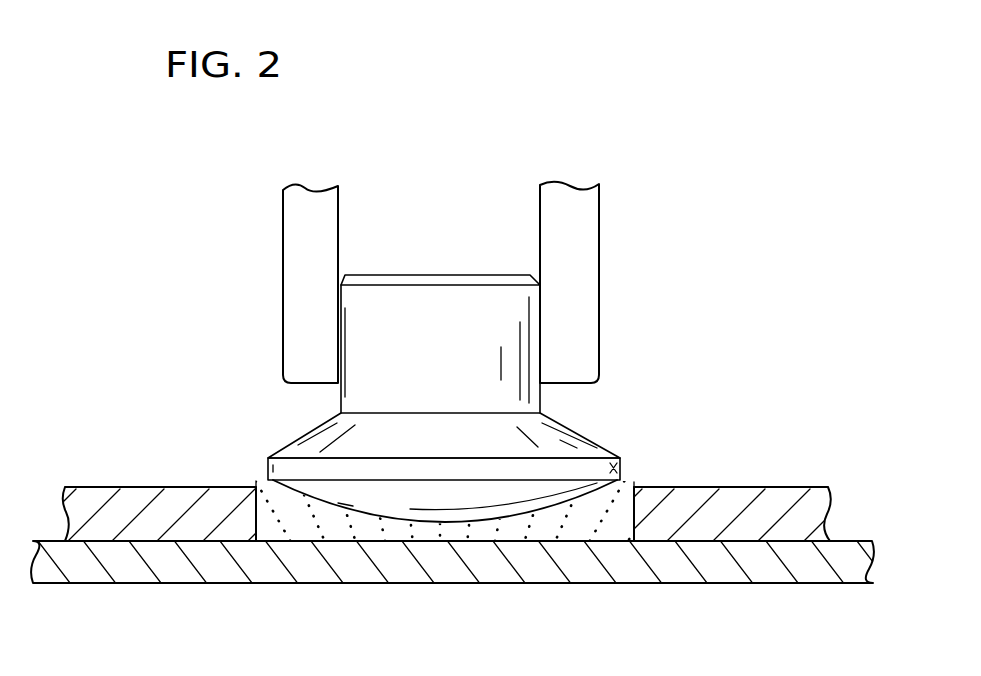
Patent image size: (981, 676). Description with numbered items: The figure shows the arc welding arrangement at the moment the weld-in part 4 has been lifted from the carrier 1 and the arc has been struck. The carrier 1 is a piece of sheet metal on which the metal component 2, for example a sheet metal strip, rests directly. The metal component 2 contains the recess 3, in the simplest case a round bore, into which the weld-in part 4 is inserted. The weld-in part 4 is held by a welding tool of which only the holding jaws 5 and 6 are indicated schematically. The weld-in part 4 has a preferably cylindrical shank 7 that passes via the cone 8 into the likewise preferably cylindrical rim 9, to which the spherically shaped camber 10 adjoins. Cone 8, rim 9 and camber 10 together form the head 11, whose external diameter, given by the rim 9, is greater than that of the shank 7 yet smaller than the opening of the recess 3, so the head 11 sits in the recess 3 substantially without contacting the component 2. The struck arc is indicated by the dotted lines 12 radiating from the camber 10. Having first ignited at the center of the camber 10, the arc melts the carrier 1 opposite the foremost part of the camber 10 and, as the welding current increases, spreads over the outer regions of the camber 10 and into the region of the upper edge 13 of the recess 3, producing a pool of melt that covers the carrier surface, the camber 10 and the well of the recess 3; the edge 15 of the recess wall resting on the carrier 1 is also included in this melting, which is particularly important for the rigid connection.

The carrier 1 is at (783, 563).
The metal component 2 is at (765, 507).
The recess 3 is at (627, 517).
The weld-in part 4 is at (463, 275).
The holding jaw 5 is at (293, 225).
The holding jaw 6 is at (577, 232).
The shank 7 is at (363, 342).
The cone 8 is at (580, 428).
The rim 9 is at (357, 517).
The camber 10 is at (405, 517).
The head 11 is at (297, 437).
The dotted lines 12 is at (350, 523).
The upper edge of the recess 13 is at (207, 487).
The edge of the wall of the recess 15 is at (250, 540).